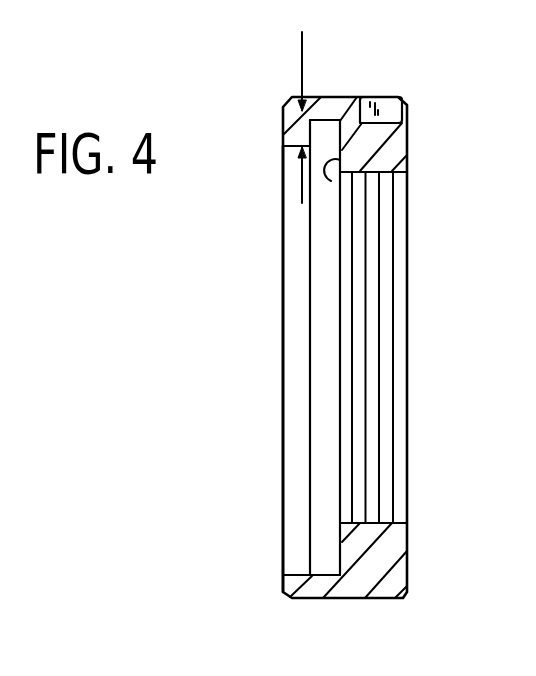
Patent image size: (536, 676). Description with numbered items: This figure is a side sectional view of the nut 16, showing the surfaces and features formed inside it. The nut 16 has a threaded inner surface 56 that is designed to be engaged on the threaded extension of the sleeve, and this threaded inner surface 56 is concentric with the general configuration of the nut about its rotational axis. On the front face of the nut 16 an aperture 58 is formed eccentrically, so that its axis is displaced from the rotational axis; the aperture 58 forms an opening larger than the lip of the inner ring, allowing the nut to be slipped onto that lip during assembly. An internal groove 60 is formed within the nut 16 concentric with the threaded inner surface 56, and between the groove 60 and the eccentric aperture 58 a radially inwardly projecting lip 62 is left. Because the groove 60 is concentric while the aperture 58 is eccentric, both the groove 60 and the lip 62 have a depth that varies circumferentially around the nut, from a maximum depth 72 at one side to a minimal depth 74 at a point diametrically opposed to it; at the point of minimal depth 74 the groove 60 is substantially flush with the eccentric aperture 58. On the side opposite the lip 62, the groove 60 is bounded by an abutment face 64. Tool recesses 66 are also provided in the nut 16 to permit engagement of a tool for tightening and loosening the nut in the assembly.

The nut 16 is at (352, 590).
The threaded inner surface 56 is at (392, 523).
The aperture 58 is at (292, 222).
The internal groove 60 is at (327, 135).
The lip 62 is at (300, 136).
The abutment face 64 is at (331, 181).
The tool recesses 66 is at (388, 112).
The maximum depth 72 is at (305, 57).
The minimal depth 74 is at (305, 588).